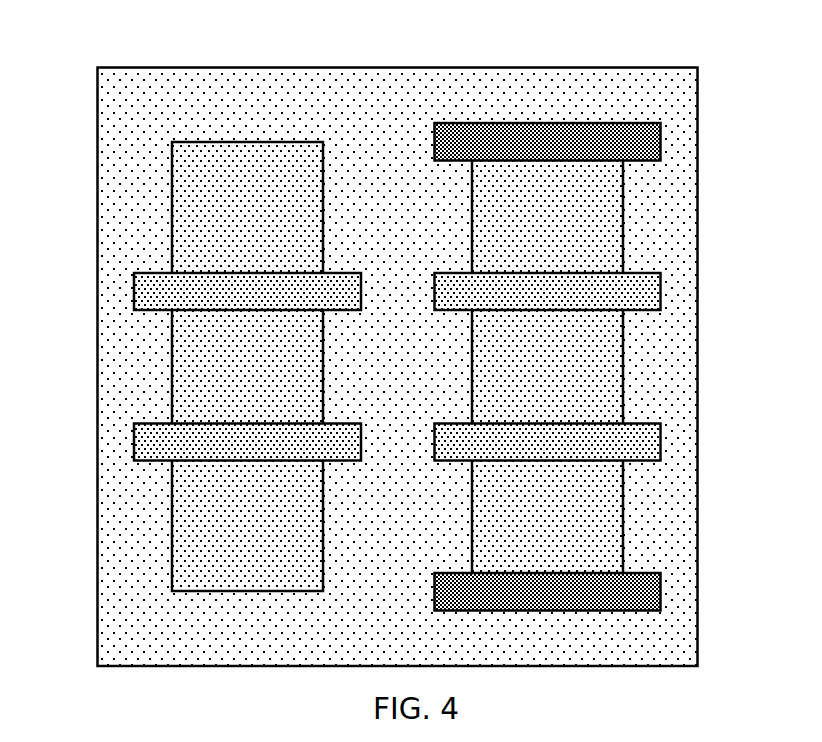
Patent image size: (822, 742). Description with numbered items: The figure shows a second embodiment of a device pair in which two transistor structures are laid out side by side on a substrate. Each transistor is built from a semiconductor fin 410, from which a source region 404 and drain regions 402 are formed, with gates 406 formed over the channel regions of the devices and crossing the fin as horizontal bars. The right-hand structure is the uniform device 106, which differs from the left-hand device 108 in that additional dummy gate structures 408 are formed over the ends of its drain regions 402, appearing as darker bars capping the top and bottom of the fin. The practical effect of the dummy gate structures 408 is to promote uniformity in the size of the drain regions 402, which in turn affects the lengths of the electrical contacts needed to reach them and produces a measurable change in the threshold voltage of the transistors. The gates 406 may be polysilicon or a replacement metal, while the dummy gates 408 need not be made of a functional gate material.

The uniform device 106 is at (618, 315).
The first fin structure 108 is at (246, 140).
The drain region 402 is at (623, 215).
The source region 404 is at (623, 365).
The gate 406 is at (661, 290).
The dummy gate structure 408 is at (661, 139).
The semiconductor fin 410 is at (172, 535).